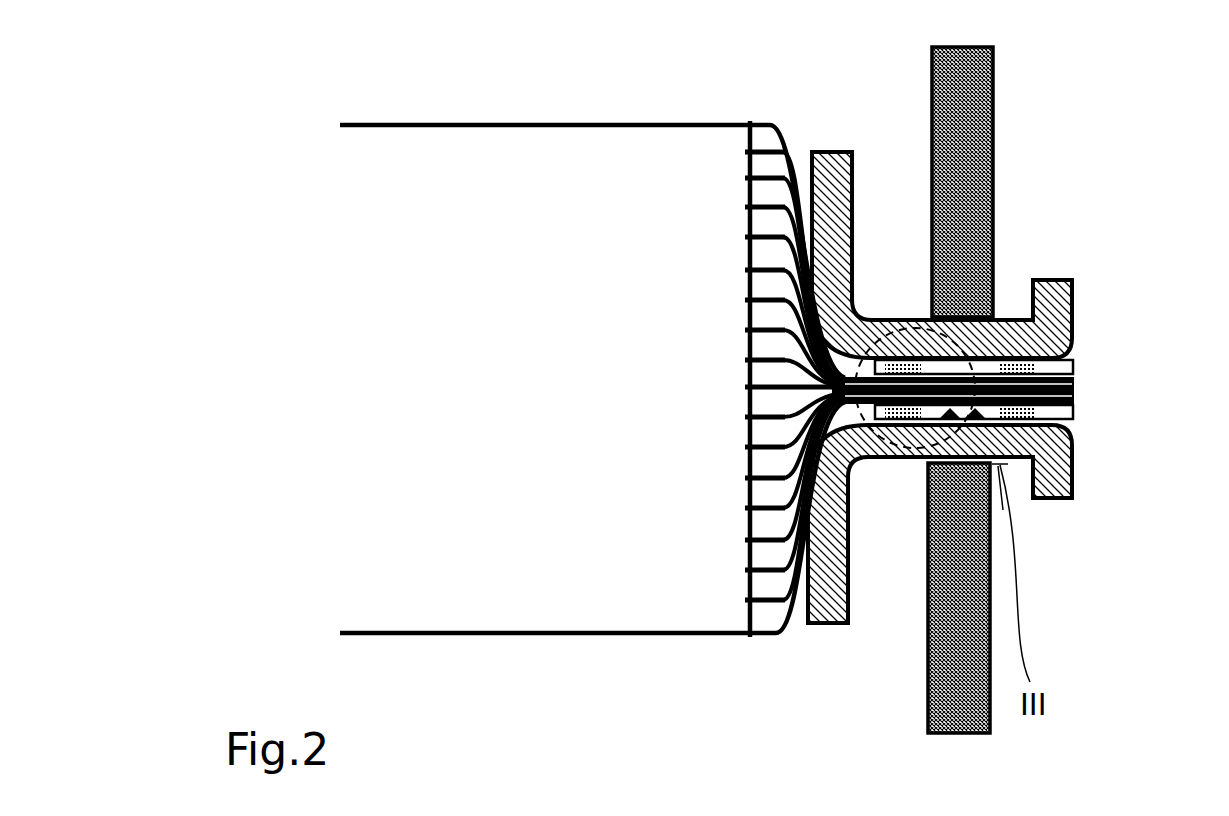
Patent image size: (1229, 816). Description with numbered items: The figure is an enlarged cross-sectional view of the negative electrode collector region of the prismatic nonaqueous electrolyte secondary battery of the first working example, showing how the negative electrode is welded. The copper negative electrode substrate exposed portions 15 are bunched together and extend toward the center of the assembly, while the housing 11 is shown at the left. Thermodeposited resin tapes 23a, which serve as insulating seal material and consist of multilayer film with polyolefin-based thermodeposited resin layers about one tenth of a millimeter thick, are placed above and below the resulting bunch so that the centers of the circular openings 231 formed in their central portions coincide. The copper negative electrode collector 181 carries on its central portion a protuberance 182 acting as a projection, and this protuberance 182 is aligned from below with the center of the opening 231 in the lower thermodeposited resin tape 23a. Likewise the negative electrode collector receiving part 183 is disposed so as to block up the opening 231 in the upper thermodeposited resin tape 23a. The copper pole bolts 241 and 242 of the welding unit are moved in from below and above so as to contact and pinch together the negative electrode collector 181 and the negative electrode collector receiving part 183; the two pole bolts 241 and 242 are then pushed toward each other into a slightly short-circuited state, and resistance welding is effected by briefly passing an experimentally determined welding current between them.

The tube 11 is at (412, 596).
The negative electrode substrate exposed portions 15 is at (775, 175).
The negative electrode collector 181 is at (1045, 498).
The protuberance 182 is at (1072, 485).
The negative electrode collector receiving part 183 is at (1063, 290).
The opening 231 is at (892, 538).
The thermodeposited resin tape 23a is at (1075, 365).
The pole bolt 241 is at (928, 713).
The pole bolt 242 is at (993, 62).